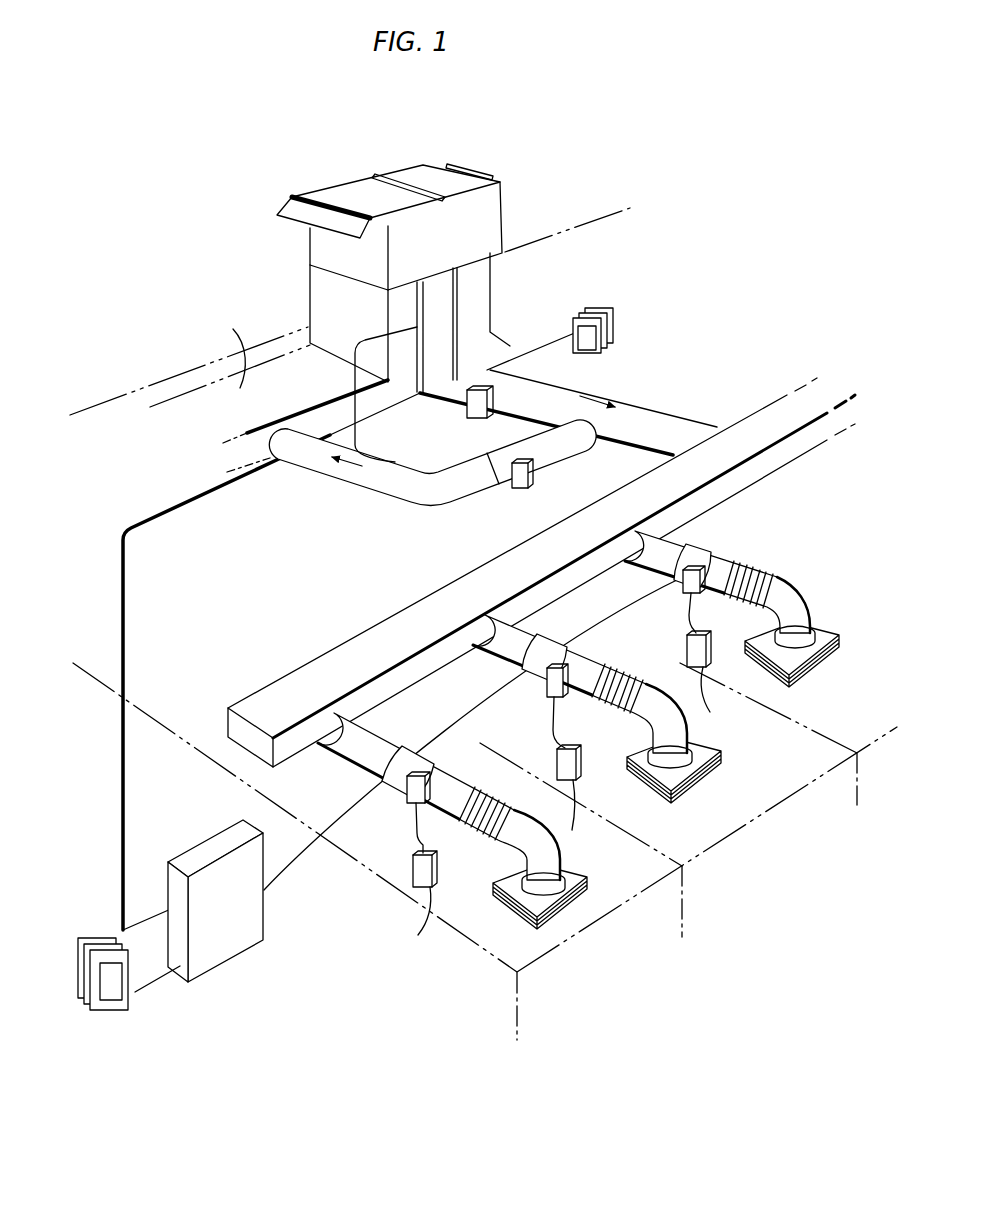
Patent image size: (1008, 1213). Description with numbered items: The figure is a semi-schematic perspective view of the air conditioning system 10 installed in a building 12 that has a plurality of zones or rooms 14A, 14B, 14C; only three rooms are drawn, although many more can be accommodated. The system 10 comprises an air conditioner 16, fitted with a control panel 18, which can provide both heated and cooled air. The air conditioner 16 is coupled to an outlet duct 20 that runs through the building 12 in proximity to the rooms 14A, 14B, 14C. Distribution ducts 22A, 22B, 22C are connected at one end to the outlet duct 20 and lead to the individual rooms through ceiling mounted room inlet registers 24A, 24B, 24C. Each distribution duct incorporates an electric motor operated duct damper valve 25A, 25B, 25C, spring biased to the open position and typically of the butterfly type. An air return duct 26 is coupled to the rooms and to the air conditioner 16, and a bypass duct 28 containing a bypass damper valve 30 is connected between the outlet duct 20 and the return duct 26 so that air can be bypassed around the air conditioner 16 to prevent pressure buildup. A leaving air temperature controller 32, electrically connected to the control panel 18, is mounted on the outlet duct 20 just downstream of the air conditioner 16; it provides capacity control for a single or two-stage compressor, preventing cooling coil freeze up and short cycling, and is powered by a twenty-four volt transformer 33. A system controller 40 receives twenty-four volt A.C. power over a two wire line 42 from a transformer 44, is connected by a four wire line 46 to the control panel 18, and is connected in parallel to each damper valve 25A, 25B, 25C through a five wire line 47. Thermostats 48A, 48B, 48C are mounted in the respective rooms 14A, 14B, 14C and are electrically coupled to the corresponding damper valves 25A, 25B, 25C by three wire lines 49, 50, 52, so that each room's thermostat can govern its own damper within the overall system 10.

The air conditioning system 10 is at (674, 163).
The building 12 is at (107, 398).
The room 14A is at (582, 913).
The room 14B is at (702, 828).
The room 14C is at (852, 724).
The air conditioner 16 is at (356, 176).
The control panel 18 is at (492, 222).
The outlet duct 20 is at (660, 411).
The distribution duct 22A is at (347, 720).
The distribution duct 22B is at (483, 618).
The distribution duct 22C is at (690, 576).
The room inlet register 24A is at (547, 925).
The room inlet register 24B is at (713, 770).
The room inlet register 24C is at (806, 664).
The duct damper valve 25A is at (398, 768).
The duct damper valve 25B is at (596, 657).
The duct damper valve 25C is at (746, 566).
The air return duct 26 is at (216, 347).
The bypass duct 28 is at (367, 487).
The bypass damper valve 30 is at (507, 493).
The leaving air temperature controller 32 is at (465, 412).
The transformer 33 is at (578, 330).
The system controller 40 is at (228, 953).
The two wire line 42 is at (119, 984).
The transformer 44 is at (104, 946).
The four wire line 46 is at (121, 848).
The five wire line 47 is at (282, 884).
The thermostat 48A is at (413, 909).
The thermostat 48B is at (594, 798).
The thermostat 48C is at (724, 679).
The three wire line 49 is at (400, 845).
The three wire line 50 is at (580, 742).
The three wire line 52 is at (688, 614).